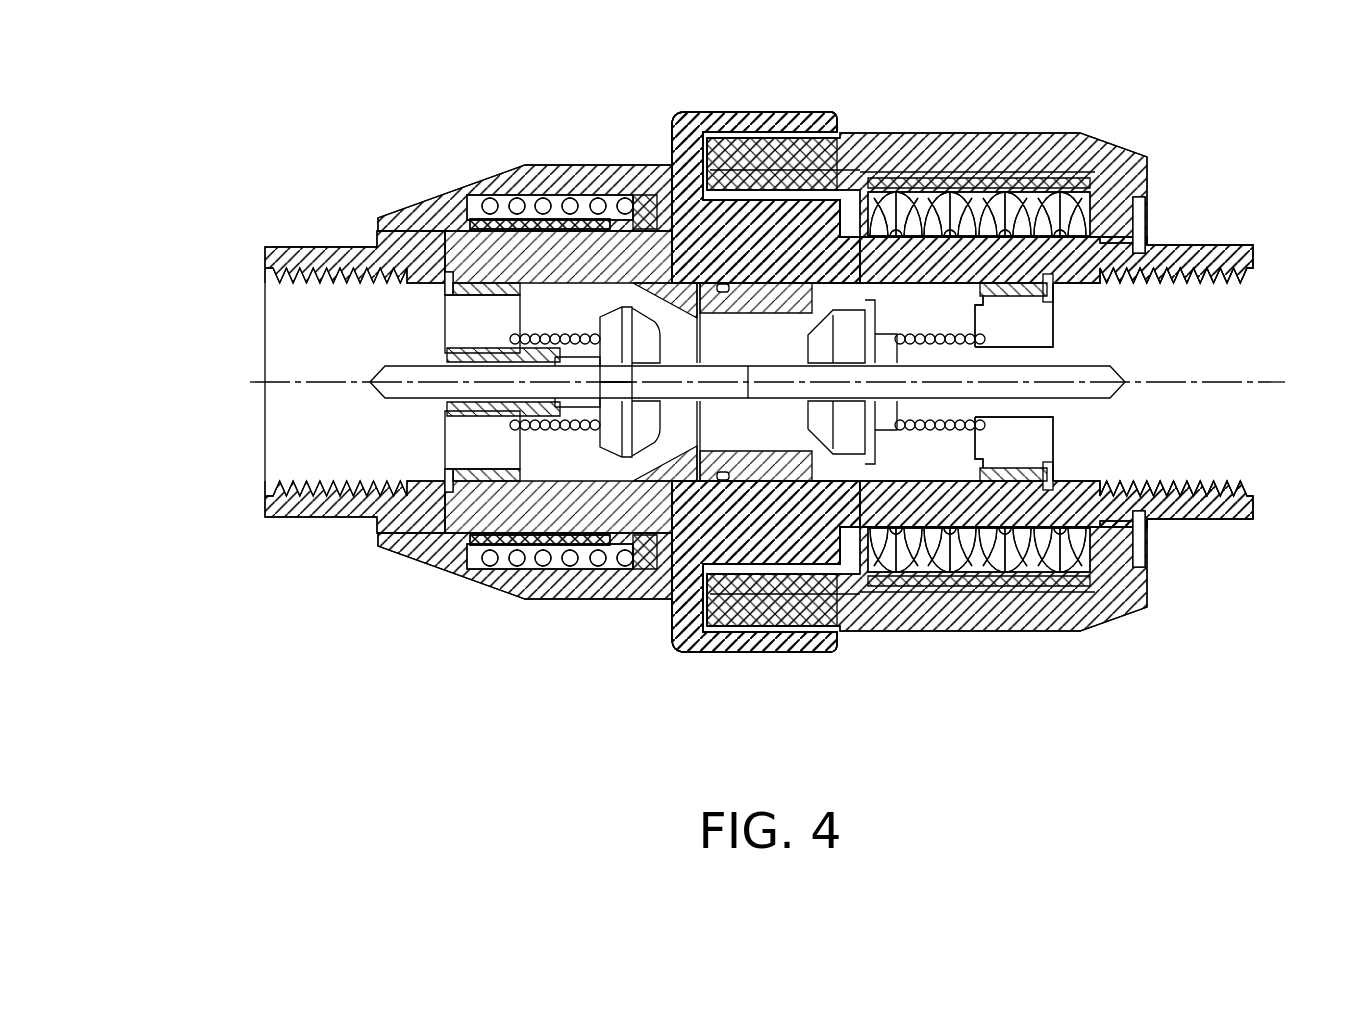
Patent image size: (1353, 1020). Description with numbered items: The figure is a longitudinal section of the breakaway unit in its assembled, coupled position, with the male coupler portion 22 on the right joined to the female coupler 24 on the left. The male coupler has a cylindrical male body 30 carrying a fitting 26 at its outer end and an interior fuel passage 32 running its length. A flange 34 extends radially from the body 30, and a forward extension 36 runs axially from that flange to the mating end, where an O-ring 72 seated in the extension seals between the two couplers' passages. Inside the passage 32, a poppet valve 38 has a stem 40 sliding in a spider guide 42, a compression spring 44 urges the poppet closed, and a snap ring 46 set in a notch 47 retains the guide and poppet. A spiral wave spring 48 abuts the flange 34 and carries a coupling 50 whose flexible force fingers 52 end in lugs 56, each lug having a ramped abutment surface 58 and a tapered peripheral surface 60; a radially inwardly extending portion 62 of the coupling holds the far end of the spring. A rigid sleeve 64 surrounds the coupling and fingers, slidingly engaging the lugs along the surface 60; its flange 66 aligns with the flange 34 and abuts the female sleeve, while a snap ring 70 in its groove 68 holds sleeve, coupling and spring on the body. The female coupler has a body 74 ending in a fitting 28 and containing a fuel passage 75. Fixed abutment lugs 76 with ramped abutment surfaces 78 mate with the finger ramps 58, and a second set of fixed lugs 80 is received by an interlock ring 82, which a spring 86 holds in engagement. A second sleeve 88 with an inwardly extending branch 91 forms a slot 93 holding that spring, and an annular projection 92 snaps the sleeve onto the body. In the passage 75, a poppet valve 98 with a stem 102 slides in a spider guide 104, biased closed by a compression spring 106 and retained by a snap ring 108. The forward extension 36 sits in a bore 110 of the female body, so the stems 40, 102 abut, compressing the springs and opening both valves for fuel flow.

The male coupler portion 22 is at (1200, 183).
The female coupler 24 is at (240, 175).
The fitting 26 is at (1250, 248).
The fitting 28 is at (290, 518).
The male body 30 is at (1045, 235).
The fuel passage 32 is at (1195, 430).
The flange 34 is at (1000, 215).
The forward extension 36 is at (778, 300).
The poppet valve 38 is at (940, 432).
The stem 40 is at (795, 330).
The spider guide 42 is at (1045, 327).
The compression spring 44 is at (987, 458).
The snap ring 46 is at (1053, 472).
The notch 47 is at (1068, 283).
The spring 48 is at (1012, 245).
The coupling 50 is at (883, 445).
The force fingers 52 is at (815, 587).
The lug 56 is at (688, 300).
The ramped abutment surface 58 is at (775, 575).
The peripheral surface 60 is at (800, 600).
The radially inwardly extending portion 62 is at (1095, 225).
The sleeve 64 is at (988, 137).
The flange 66 is at (883, 185).
The groove 68 is at (1148, 556).
The snap ring 70 is at (1148, 530).
The O-ring 72 is at (712, 485).
The body 74 is at (470, 510).
The fuel passage 75 is at (300, 455).
The fixed abutment lugs 76 is at (740, 560).
The ramped abutment surface 78 is at (760, 540).
The second set of fixed lugs 80 is at (672, 240).
The interlock ring 82 is at (605, 215).
The spring 86 is at (567, 562).
The sleeve 88 is at (472, 200).
The branch 91 is at (533, 538).
The annular projection 92 is at (420, 228).
The slot 93 is at (473, 557).
The poppet valve 98 is at (520, 445).
The stem 102 is at (640, 195).
The spider guide 104 is at (457, 317).
The compression spring 106 is at (434, 236).
The snap ring 108 is at (440, 288).
The bore 110 is at (733, 285).